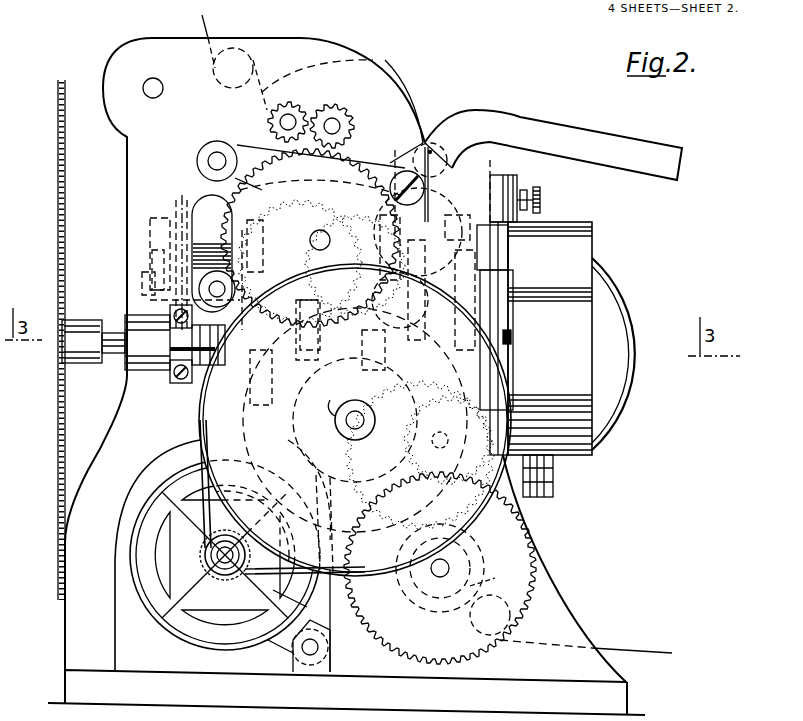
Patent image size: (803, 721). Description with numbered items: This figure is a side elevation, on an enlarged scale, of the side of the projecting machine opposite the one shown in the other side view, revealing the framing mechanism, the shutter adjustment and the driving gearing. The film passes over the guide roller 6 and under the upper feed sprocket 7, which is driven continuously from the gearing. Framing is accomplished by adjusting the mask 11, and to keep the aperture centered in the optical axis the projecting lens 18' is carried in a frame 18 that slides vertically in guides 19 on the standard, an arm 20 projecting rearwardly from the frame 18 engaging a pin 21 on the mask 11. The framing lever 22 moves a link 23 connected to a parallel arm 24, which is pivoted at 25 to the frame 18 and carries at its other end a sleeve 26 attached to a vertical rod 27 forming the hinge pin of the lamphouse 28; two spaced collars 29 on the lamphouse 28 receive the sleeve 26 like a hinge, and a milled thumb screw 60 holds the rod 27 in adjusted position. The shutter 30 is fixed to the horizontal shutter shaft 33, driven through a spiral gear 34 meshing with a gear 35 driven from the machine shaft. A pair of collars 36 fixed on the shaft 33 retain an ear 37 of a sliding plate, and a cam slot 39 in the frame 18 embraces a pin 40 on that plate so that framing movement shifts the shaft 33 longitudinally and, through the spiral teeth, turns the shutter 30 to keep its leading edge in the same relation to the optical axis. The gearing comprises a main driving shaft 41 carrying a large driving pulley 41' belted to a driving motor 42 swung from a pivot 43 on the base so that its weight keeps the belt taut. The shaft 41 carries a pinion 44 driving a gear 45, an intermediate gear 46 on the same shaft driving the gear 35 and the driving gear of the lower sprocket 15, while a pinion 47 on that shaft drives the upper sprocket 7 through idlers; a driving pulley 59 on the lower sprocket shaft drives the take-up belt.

The guide roller 6 is at (237, 80).
The upper feed sprocket 7 is at (312, 100).
The mask 11 is at (382, 374).
The lower sprocket 15 is at (432, 596).
The frame 18 is at (217, 250).
The projecting lens 18' is at (154, 236).
The guides 19 is at (180, 218).
The arm 20 is at (330, 280).
The pin 21 is at (382, 300).
The framing lever 22 is at (670, 163).
The link 23 is at (430, 216).
The arm 24 is at (368, 250).
The pivot 25 is at (214, 275).
The sleeve 26 is at (516, 332).
The vertical rod 27 is at (512, 248).
The lamphouse 28 is at (612, 374).
The collars 29 is at (514, 277).
The shutter 30 is at (66, 190).
The shutter shaft 33 is at (108, 336).
The spiral gear 34 is at (472, 290).
The gear 35 is at (400, 454).
The collars 36 is at (140, 372).
The ear 37 is at (178, 380).
The cam slot 39 is at (208, 337).
The pin 40 is at (202, 374).
The main driving shaft 41 is at (355, 420).
The driving pulley 41' is at (488, 568).
The driving motor 42 is at (187, 627).
The pivot 43 is at (302, 650).
The pinion 44 is at (323, 398).
The gear 45 is at (330, 368).
The intermediate gear 46 is at (392, 478).
The pinion 47 is at (379, 350).
The driving pulley 59 is at (505, 570).
The milled thumb screw 60 is at (543, 201).